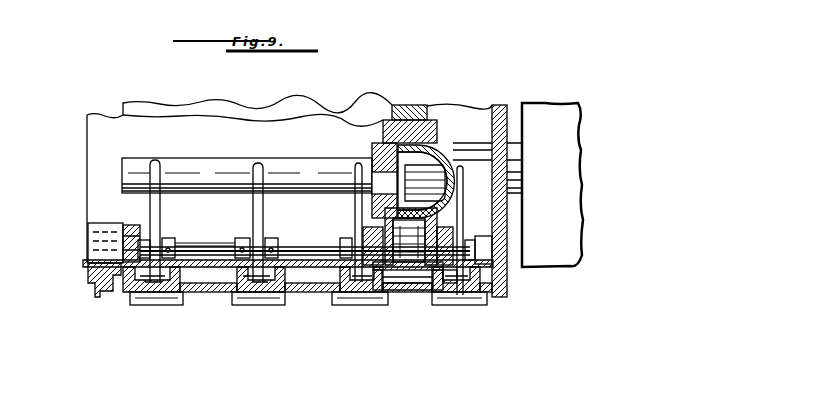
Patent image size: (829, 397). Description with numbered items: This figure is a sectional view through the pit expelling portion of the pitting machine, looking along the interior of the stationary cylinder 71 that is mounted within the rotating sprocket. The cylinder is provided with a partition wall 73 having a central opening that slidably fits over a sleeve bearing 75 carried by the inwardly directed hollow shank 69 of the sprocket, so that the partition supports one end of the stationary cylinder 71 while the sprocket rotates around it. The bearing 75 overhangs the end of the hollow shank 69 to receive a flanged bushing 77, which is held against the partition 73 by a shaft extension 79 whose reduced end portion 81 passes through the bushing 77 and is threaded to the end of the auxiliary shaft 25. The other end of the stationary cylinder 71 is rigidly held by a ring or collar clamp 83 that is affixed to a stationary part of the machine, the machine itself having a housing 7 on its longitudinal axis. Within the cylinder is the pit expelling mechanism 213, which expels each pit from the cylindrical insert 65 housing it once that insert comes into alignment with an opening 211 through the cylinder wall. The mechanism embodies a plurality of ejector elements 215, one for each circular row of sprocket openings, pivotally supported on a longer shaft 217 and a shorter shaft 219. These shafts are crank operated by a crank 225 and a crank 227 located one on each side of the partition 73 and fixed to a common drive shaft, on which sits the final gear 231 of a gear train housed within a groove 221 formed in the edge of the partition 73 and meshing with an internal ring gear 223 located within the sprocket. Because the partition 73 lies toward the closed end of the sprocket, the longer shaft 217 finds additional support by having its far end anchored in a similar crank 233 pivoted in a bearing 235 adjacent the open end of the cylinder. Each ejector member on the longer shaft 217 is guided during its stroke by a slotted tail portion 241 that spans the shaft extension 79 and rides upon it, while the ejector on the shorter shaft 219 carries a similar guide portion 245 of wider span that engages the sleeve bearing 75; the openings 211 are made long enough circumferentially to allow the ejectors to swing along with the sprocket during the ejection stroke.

The housing 7 is at (565, 175).
The auxiliary shaft 25 is at (437, 140).
The cylindrical insert 65 is at (160, 305).
The hollow shank 69 is at (440, 150).
The stationary cylinder 71 is at (102, 147).
The partition wall 73 is at (385, 125).
The sleeve bearing 75 is at (495, 135).
The flanged bushing 77 is at (375, 150).
The shaft extension 79 is at (132, 164).
The reduced end portion 81 is at (385, 180).
The collar clamp 83 is at (90, 280).
The opening 211 is at (140, 282).
The pit expelling mechanism 213 is at (252, 240).
The ejector elements 215 is at (163, 241).
The shaft 217 is at (206, 247).
The shaft 219 is at (436, 272).
The groove 221 is at (383, 222).
The internal ring gear 223 is at (418, 286).
The crank 225 is at (380, 236).
The crank 227 is at (490, 243).
The final gear 231 is at (392, 290).
The crank 233 is at (133, 226).
The bearing 235 is at (100, 247).
The slotted tail portion 241 is at (155, 182).
The post 245 is at (462, 185).